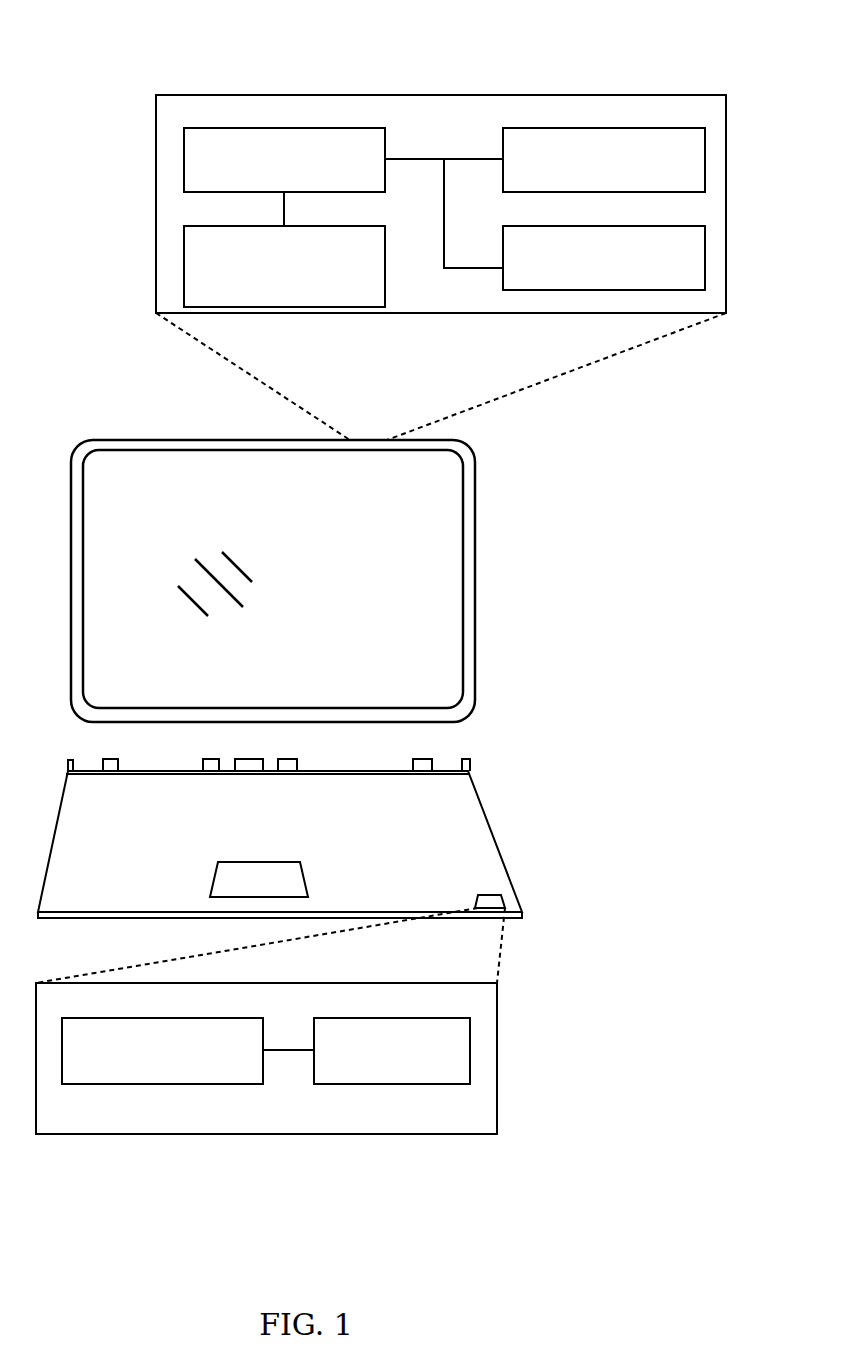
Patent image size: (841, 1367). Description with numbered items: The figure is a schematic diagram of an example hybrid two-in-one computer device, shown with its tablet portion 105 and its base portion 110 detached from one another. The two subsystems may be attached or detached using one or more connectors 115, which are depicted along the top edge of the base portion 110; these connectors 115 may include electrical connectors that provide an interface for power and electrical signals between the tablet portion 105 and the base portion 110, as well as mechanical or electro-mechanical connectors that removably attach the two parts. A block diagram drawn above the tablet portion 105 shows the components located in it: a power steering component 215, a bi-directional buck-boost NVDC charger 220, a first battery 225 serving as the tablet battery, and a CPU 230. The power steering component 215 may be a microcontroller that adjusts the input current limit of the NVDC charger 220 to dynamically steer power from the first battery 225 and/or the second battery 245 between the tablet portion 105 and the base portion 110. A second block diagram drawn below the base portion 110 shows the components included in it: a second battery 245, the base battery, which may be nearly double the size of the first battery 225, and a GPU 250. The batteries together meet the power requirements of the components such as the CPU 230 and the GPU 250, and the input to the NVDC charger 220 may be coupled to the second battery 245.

The tablet portion 105 is at (71, 456).
The base portion 110 is at (52, 846).
The connectors 115 is at (67, 766).
The power steering component 215 is at (284, 266).
The NVDC charger 220 is at (284, 160).
The first battery 225 is at (604, 160).
The CPU 230 is at (604, 258).
The second battery 245 is at (162, 1051).
The GPU 250 is at (392, 1051).